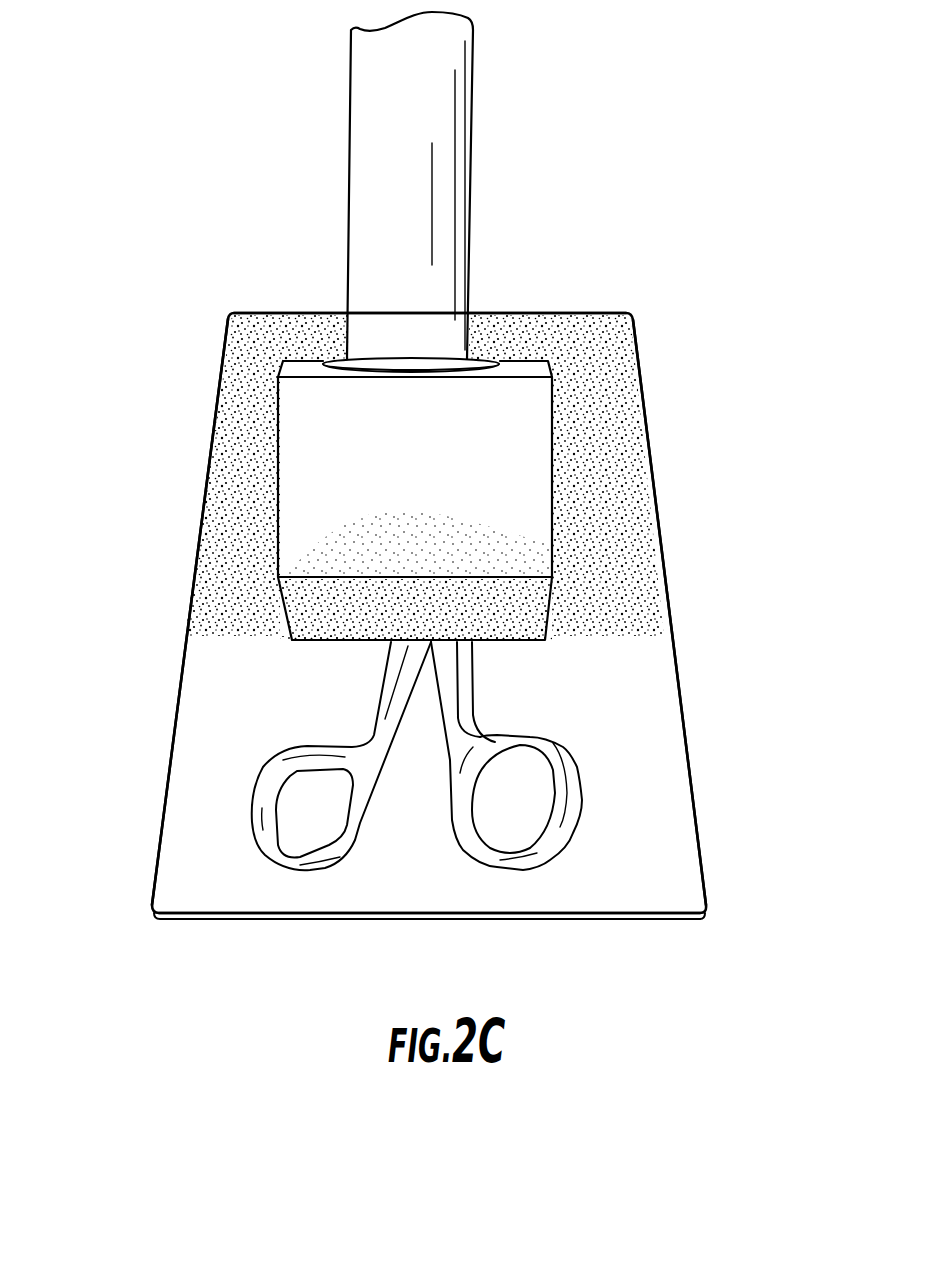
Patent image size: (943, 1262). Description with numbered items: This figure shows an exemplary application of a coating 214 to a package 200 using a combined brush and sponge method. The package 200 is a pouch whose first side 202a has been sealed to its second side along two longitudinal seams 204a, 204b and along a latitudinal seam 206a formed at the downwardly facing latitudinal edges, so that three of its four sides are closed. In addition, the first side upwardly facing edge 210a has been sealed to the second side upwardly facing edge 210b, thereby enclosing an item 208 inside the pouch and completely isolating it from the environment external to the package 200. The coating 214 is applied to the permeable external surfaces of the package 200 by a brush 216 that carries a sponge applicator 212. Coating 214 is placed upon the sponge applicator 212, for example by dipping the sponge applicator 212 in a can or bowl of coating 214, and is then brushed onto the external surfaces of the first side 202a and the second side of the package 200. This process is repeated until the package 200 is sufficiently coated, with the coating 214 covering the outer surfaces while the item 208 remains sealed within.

The package 200 is at (497, 613).
The first side 202a is at (425, 964).
The longitudinal seam 204a is at (711, 612).
The longitudinal seam 204b is at (134, 612).
The latitudinal seam 206a is at (493, 258).
The item 208 is at (318, 756).
The first side upwardly facing edge 210a is at (429, 1020).
The second side upwardly facing edge 210b is at (550, 955).
The sponge applicator 212 is at (351, 428).
The coating 214 is at (370, 477).
The brush 216 is at (471, 185).